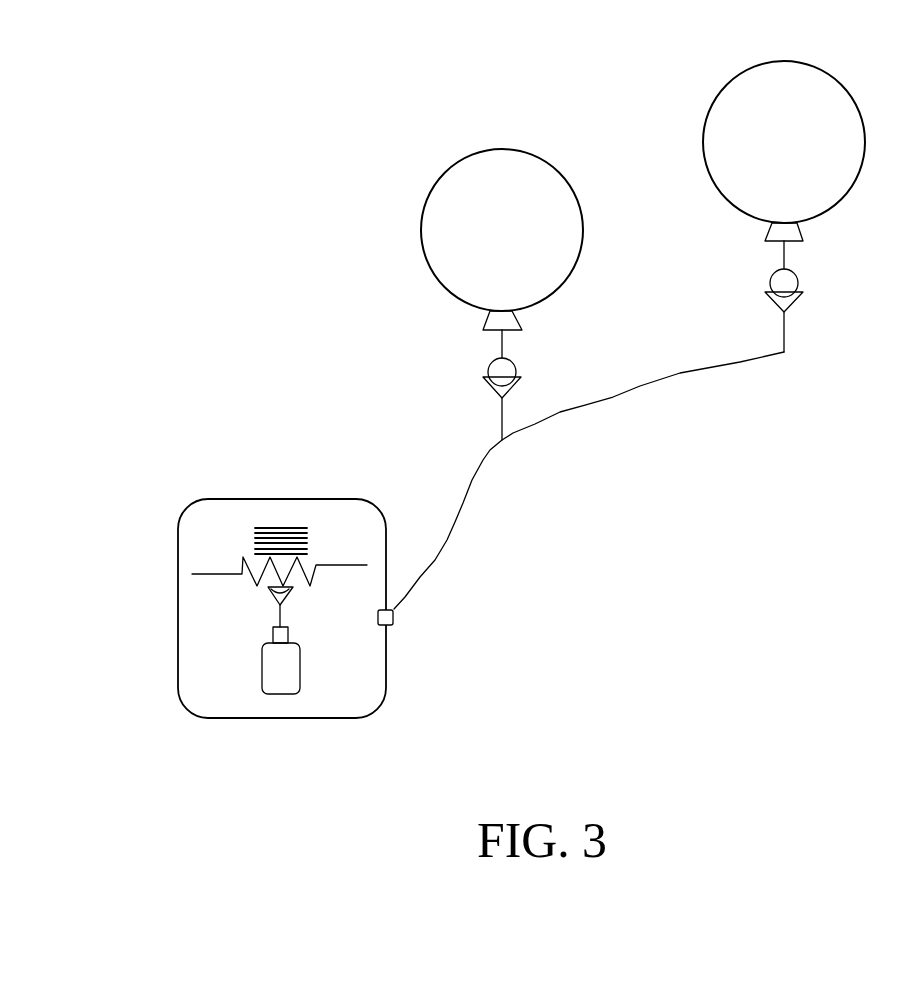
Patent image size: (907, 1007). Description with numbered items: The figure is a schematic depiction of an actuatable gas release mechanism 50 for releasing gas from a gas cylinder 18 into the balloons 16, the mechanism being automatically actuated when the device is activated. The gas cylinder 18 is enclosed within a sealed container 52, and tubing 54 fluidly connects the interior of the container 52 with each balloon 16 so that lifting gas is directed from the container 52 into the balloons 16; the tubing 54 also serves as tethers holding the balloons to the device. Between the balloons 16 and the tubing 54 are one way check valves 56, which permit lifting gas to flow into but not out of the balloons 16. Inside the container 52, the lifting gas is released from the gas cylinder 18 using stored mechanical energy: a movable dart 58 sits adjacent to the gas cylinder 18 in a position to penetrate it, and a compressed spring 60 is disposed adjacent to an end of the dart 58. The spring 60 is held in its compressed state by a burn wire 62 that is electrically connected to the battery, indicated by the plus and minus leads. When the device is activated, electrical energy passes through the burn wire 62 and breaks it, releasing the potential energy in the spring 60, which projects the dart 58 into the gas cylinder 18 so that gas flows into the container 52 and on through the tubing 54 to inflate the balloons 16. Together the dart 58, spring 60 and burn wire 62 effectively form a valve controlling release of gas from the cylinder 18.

The balloons 16 is at (503, 149).
The gas cylinder 18 is at (250, 668).
The actuatable gas release mechanism 50 is at (281, 738).
The sealed container 52 is at (397, 664).
The tubing 54 is at (568, 416).
The one way check valves 56 is at (466, 378).
The movable dart 58 is at (258, 605).
The compressed spring 60 is at (283, 516).
The burn wire 62 is at (186, 563).